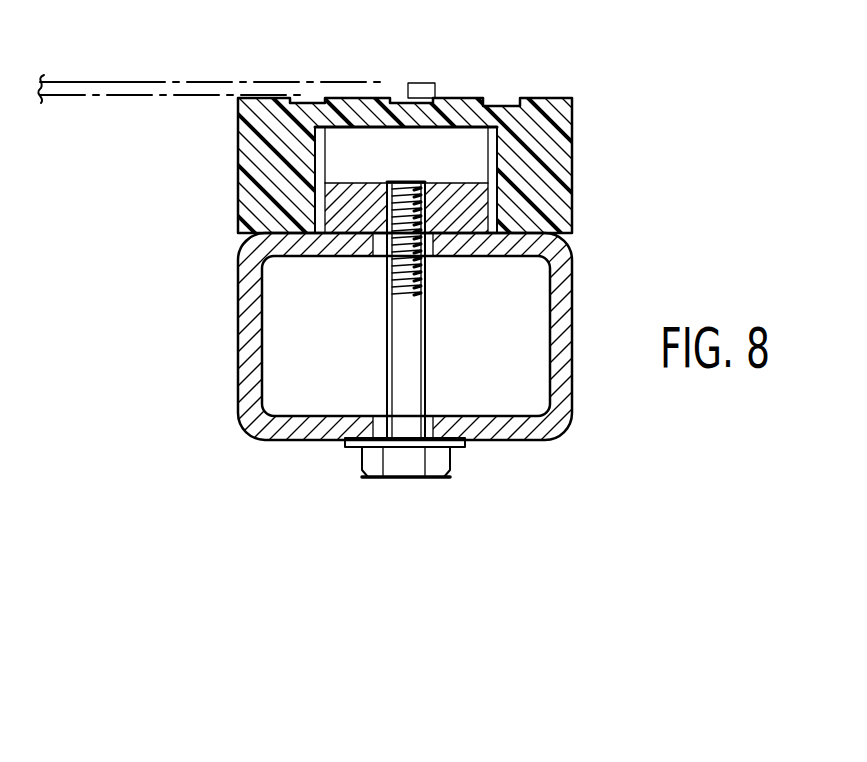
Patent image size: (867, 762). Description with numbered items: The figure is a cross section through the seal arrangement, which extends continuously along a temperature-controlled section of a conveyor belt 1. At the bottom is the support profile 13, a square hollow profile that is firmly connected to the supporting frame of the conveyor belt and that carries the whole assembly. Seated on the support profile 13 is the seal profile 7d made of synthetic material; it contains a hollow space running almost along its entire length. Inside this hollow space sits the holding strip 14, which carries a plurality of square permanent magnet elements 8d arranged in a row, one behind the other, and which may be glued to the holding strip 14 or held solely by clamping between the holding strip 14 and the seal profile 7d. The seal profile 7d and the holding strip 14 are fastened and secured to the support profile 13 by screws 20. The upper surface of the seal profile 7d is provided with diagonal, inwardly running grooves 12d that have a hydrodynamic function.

The mounting plate / support rail 1 is at (73, 92).
The seal profile 7d is at (560, 128).
The permanent magnet elements 8d is at (340, 153).
The grooves 12d is at (395, 100).
The support profile 13 is at (247, 367).
The holding strip 14 is at (470, 217).
The screws 20 is at (383, 352).